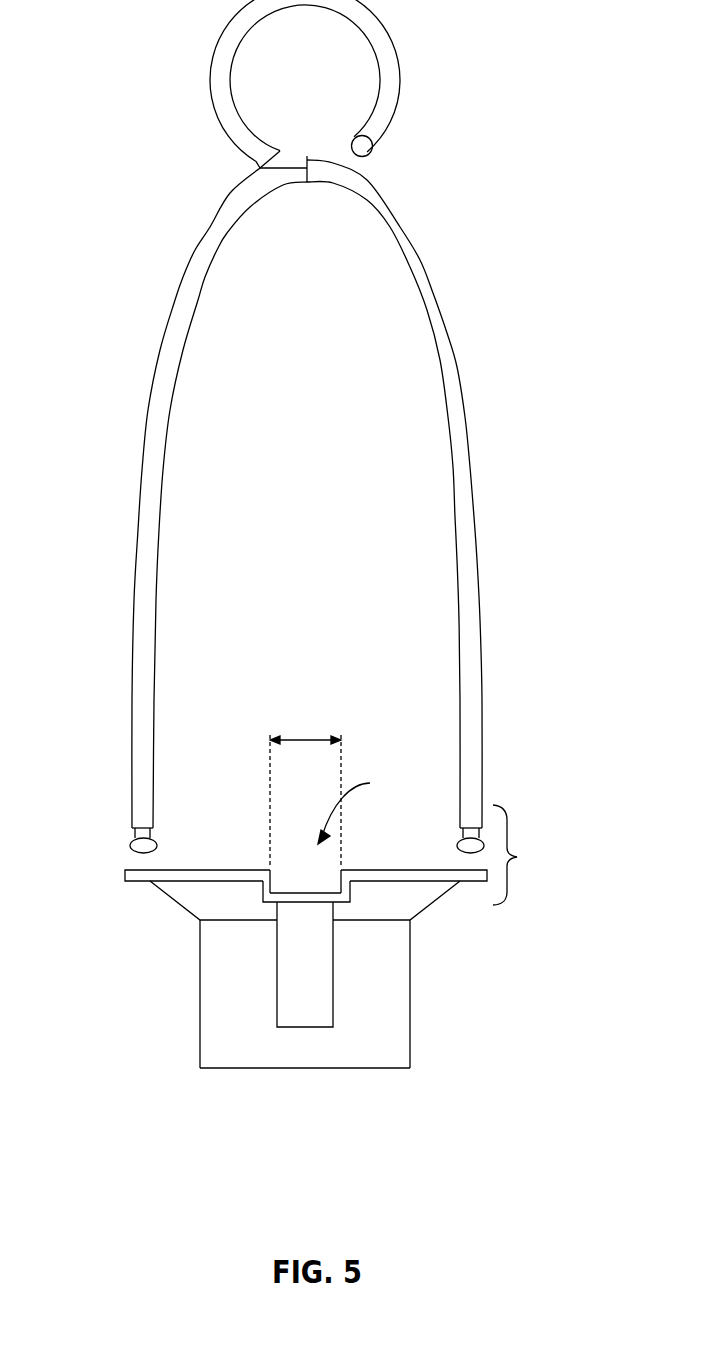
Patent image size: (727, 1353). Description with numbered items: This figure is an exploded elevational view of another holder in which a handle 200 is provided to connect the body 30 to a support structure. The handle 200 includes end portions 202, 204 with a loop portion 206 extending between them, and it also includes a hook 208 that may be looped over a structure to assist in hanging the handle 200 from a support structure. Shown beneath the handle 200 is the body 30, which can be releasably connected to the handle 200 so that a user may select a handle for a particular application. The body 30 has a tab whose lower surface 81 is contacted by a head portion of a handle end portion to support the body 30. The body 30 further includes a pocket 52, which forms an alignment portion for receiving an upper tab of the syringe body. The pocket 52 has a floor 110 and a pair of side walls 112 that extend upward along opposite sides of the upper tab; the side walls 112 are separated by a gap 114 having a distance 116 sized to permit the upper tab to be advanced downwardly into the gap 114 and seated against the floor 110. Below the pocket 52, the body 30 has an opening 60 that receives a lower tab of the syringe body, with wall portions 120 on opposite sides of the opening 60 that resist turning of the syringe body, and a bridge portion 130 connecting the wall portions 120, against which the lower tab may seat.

The handle 200 is at (480, 617).
The hook 208 is at (388, 63).
The loop portion 206 is at (437, 348).
The end portion 202 is at (143, 740).
The end portion 204 is at (482, 733).
The distance 116 is at (305, 737).
The pocket 52 is at (361, 806).
The lower surface 81 is at (146, 885).
The floor 110 is at (335, 897).
The side walls 112 is at (271, 876).
The gap 114 is at (290, 886).
The body 30 is at (398, 977).
The wall portions 120 is at (260, 1003).
The bridge portion 130 is at (315, 1052).
The opening 60 is at (303, 1012).